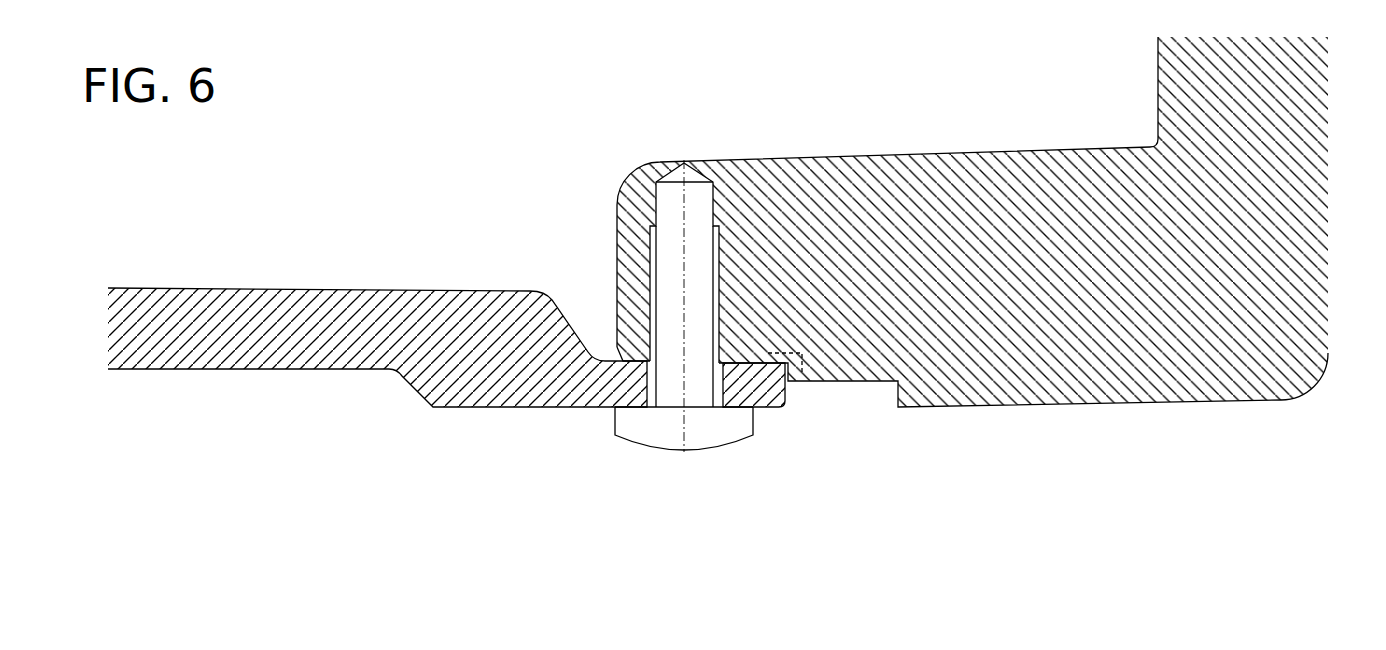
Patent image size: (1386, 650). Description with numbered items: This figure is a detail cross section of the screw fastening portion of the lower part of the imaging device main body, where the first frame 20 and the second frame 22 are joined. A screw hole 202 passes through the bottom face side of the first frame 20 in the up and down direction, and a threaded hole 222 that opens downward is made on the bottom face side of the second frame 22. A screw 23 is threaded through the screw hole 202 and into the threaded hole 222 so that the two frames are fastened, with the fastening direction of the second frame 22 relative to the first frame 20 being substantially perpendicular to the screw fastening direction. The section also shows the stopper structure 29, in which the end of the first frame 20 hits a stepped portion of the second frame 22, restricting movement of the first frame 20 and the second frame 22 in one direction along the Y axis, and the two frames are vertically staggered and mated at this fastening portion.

The first frame 20 is at (352, 290).
The second frame 22 is at (933, 155).
The threaded hole 222 is at (718, 240).
The screw 23 is at (607, 436).
The screw hole 202 is at (732, 393).
The stopper structure 29 is at (797, 383).